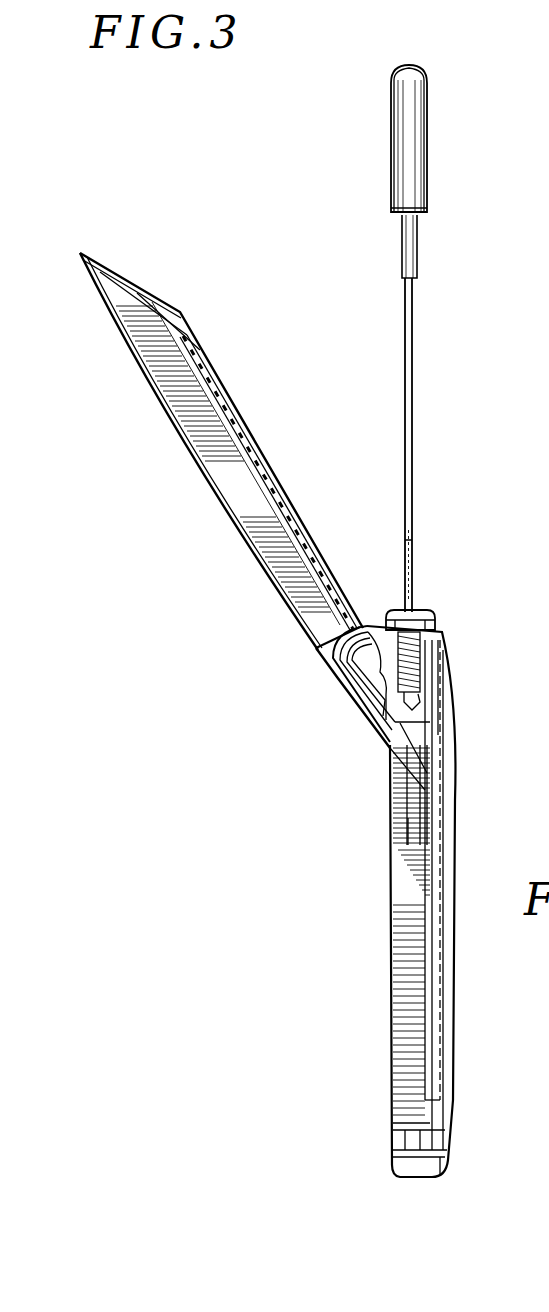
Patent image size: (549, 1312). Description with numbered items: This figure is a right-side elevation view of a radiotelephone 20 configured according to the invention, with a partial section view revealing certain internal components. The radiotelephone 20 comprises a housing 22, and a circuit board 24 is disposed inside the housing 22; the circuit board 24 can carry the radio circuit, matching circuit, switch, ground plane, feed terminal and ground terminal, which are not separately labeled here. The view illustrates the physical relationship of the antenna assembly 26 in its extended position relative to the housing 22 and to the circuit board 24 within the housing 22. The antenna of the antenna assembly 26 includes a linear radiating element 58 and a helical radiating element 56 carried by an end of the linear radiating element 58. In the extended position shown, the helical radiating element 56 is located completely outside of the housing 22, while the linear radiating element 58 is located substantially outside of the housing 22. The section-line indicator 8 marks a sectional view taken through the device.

The radiotelephone 20 is at (269, 93).
The housing 22 is at (358, 937).
The circuit board 24 is at (432, 660).
The antenna assembly 26 is at (428, 248).
The helical radiating element 56 is at (400, 122).
The linear radiating element 58 is at (405, 386).
The section line 8 is at (428, 543).